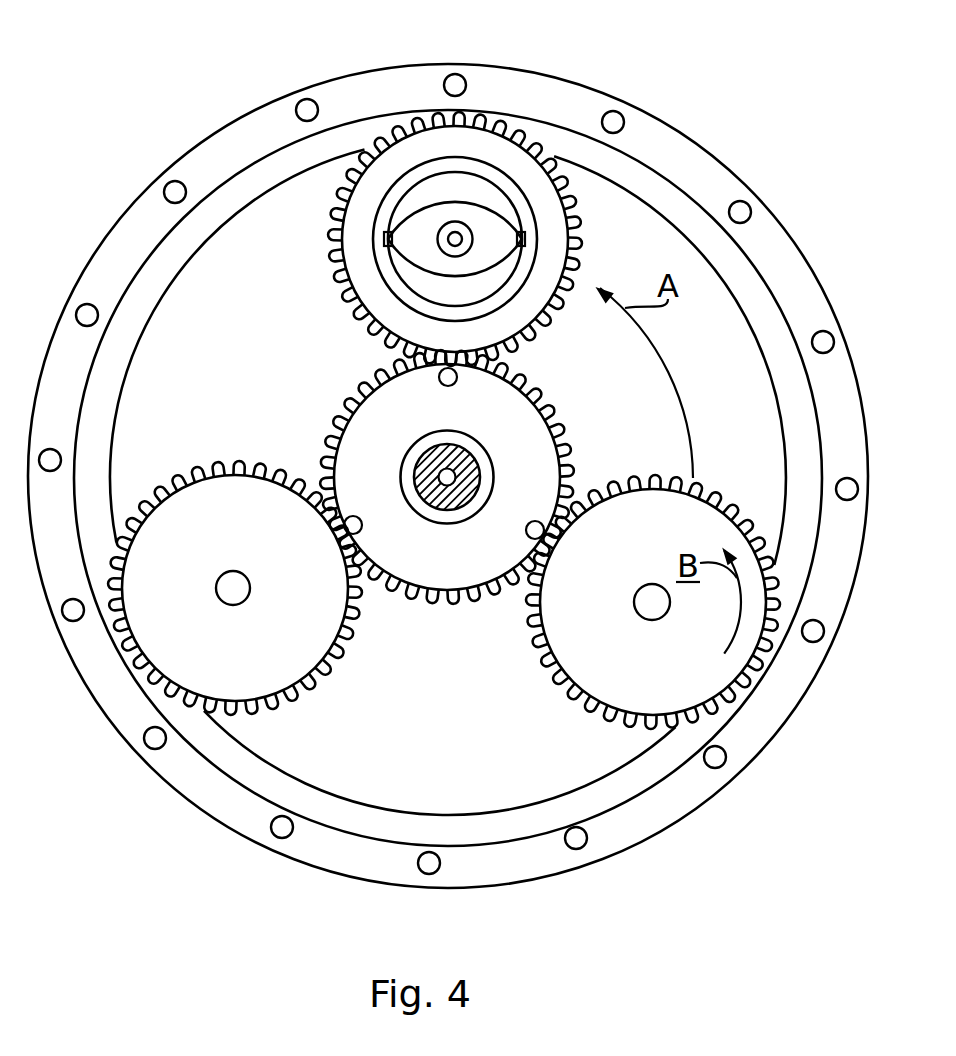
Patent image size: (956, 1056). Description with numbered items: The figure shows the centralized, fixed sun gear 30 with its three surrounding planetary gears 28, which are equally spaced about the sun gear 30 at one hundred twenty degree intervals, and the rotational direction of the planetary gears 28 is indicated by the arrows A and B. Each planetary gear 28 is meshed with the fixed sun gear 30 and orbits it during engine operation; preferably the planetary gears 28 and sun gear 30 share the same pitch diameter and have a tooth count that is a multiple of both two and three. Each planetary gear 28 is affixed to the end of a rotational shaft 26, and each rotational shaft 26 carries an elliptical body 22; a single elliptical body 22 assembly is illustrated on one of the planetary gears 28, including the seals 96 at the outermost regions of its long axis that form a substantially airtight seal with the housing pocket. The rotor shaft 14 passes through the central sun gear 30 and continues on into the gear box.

The rotor shaft 14 is at (466, 470).
The elliptical body 22 is at (499, 243).
The rotational shaft 26 is at (459, 225).
The planetary gear 28 is at (330, 208).
The sun gear 30 is at (375, 377).
The seal 96 is at (390, 230).